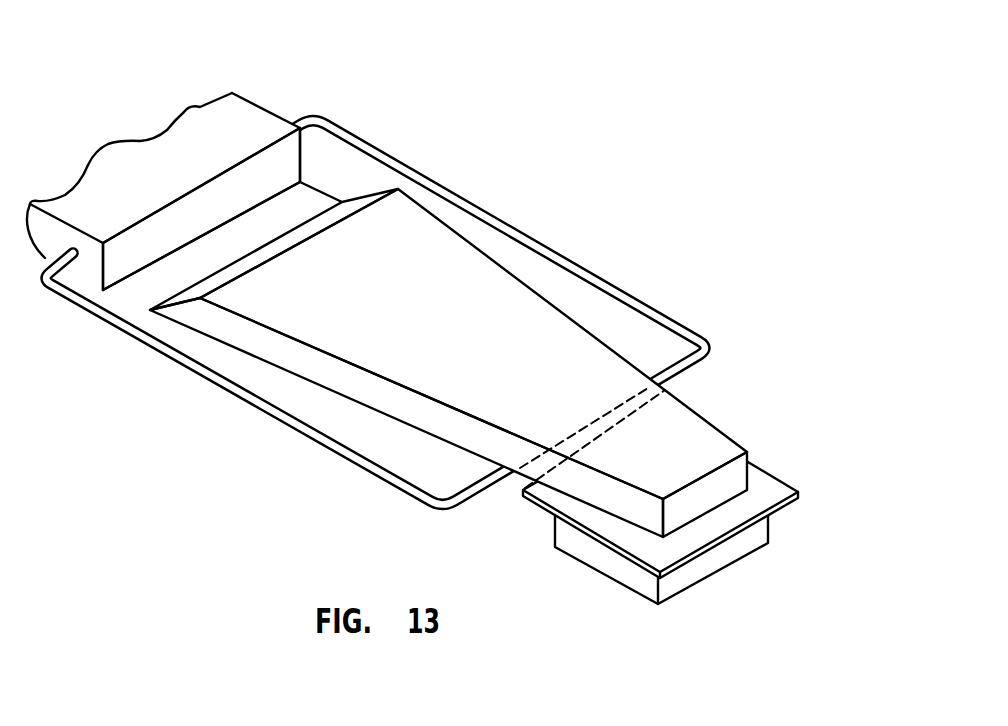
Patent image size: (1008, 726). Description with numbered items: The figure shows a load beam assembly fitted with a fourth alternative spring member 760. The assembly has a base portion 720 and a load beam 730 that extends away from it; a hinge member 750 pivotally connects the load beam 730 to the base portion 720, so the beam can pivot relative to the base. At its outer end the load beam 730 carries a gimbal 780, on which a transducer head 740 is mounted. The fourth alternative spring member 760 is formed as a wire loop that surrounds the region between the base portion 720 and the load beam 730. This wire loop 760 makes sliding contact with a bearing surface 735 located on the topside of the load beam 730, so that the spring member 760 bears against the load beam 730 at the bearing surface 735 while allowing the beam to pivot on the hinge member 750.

The base portion 720 is at (198, 113).
The load beam 730 is at (262, 353).
The bearing surface 735 is at (655, 422).
The transducer head 740 is at (672, 597).
The hinge member 750 is at (277, 212).
The fourth alternative spring member 760 is at (571, 256).
The gimbal 780 is at (783, 508).